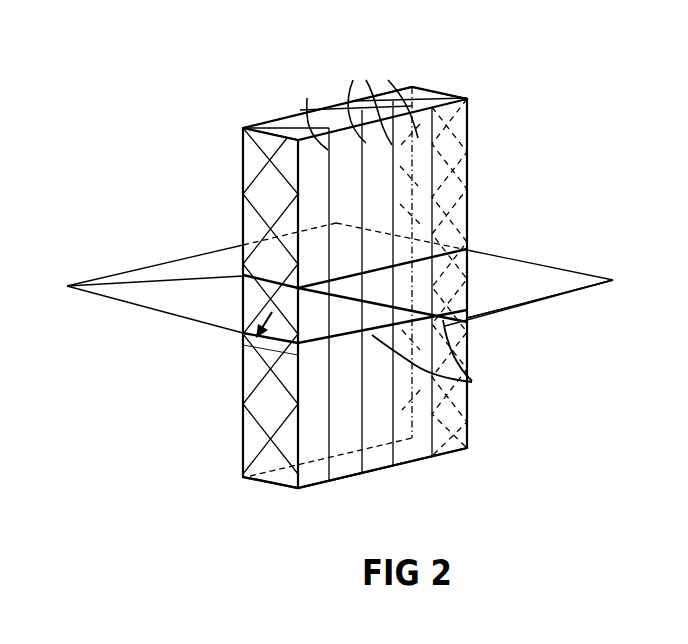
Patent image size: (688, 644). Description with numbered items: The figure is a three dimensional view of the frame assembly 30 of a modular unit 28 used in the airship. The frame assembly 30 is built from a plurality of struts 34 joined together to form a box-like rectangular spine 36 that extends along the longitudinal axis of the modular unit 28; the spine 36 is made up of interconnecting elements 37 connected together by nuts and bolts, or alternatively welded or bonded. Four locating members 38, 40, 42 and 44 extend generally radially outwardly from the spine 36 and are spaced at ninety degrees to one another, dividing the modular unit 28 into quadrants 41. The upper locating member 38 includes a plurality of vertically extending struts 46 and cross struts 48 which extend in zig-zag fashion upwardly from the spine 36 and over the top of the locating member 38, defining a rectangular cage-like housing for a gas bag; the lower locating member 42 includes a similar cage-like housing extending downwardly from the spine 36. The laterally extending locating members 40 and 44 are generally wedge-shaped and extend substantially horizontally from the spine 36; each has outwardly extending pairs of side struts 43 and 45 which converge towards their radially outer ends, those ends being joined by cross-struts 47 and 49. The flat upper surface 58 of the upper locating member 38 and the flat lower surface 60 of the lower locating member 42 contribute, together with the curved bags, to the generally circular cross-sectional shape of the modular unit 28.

The modular unit 28 is at (433, 58).
The frame assembly 30 is at (484, 176).
The struts 34 is at (331, 230).
The spine 36 is at (243, 352).
The interconnecting elements 37 is at (215, 357).
The upper locating member 38 is at (440, 91).
The locating member 40 is at (613, 280).
The quadrants 41 is at (523, 192).
The lower locating member 42 is at (403, 466).
The side struts 43 is at (552, 265).
The locating member 44 is at (137, 298).
The side struts 45 is at (108, 298).
The vertically extending struts 46 is at (307, 100).
The cross-strut 47 is at (533, 305).
The cross struts 48 is at (254, 196).
The cross-strut 49 is at (164, 263).
The flat upper surface 58 is at (288, 114).
The flat lower surface 60 is at (347, 468).